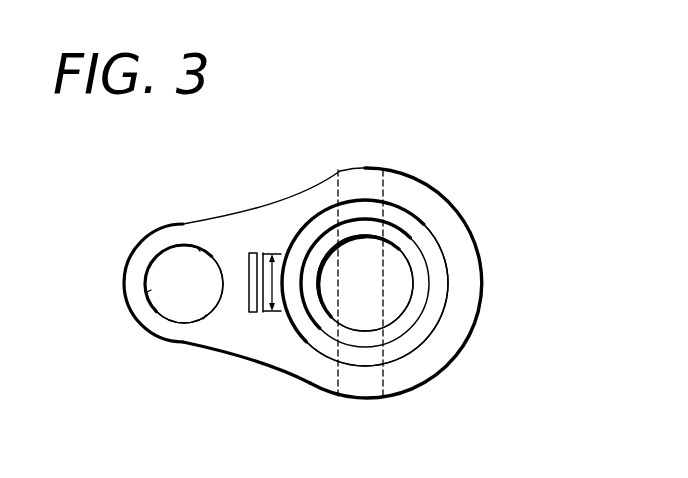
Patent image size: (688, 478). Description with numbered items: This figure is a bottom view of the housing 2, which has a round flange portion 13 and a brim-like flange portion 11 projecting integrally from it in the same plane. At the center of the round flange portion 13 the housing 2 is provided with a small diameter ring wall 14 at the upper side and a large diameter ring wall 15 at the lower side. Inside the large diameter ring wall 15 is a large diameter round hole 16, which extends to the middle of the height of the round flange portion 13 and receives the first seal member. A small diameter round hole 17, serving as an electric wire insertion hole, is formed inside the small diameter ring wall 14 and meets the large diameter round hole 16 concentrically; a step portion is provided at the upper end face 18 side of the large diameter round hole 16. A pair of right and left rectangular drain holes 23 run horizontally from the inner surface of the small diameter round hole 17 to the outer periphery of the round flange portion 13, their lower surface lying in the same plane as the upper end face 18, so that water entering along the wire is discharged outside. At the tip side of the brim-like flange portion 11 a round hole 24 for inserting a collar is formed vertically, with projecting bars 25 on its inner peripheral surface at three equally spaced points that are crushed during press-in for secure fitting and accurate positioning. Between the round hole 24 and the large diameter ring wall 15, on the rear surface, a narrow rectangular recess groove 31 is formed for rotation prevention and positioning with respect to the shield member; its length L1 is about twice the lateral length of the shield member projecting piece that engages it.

The housing 2 is at (322, 261).
The brim-like flange portion 11 is at (185, 225).
The round flange portion 13 is at (475, 262).
The small diameter ring wall 14 is at (412, 270).
The large diameter ring wall 15 is at (435, 315).
The large diameter round hole 16 is at (420, 340).
The small diameter round hole 17 is at (383, 254).
The upper end face 18 is at (423, 292).
The drain holes 23 is at (338, 188).
The round hole 24 is at (172, 298).
The projecting bars 25 is at (146, 285).
The recess groove 31 is at (249, 303).
The length of the recess groove L1 is at (273, 295).